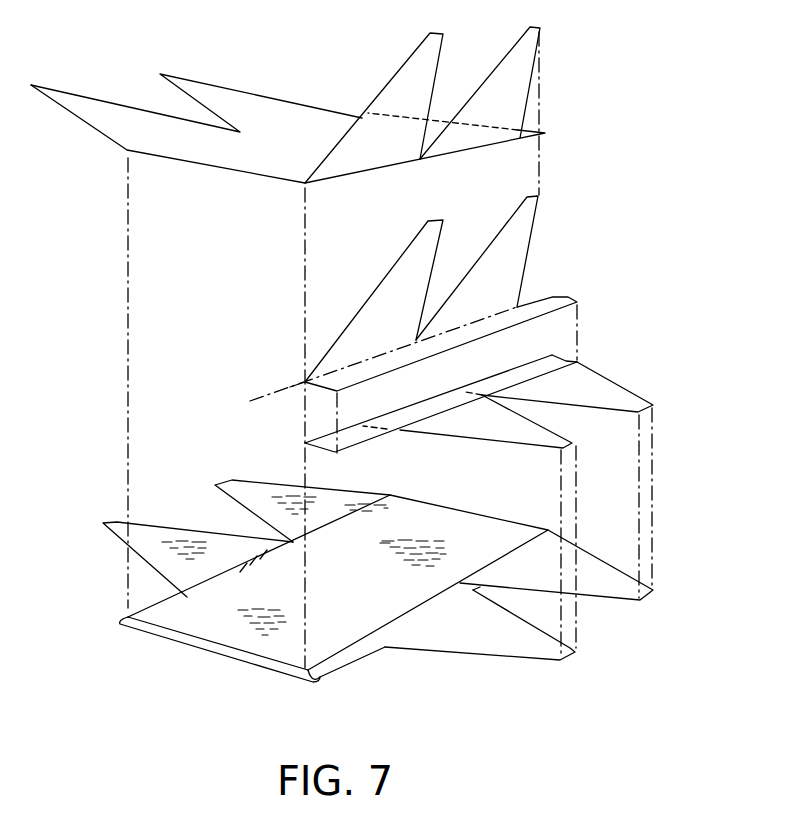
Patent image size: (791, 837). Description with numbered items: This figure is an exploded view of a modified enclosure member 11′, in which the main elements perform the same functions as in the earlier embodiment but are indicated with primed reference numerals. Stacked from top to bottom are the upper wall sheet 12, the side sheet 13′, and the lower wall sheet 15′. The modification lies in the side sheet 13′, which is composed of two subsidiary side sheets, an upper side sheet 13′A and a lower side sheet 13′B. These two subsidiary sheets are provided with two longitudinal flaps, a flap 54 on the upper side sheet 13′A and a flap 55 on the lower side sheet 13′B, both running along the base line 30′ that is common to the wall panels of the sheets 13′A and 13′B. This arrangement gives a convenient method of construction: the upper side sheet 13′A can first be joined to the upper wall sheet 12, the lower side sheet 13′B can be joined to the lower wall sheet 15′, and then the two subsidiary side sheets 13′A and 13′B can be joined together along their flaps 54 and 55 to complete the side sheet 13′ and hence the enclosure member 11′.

The upper wall sheet 12 is at (317, 76).
The side sheet 13′ is at (451, 315).
The upper subsidiary side sheet 13′A is at (527, 223).
The longitudinal flap 54 is at (553, 297).
The longitudinal flap 55 is at (563, 358).
The lower subsidiary side sheet 13′B is at (509, 497).
The base line 30′ is at (306, 444).
The stacked assembly 11′ is at (106, 371).
The lower wall sheet 15′ is at (209, 672).